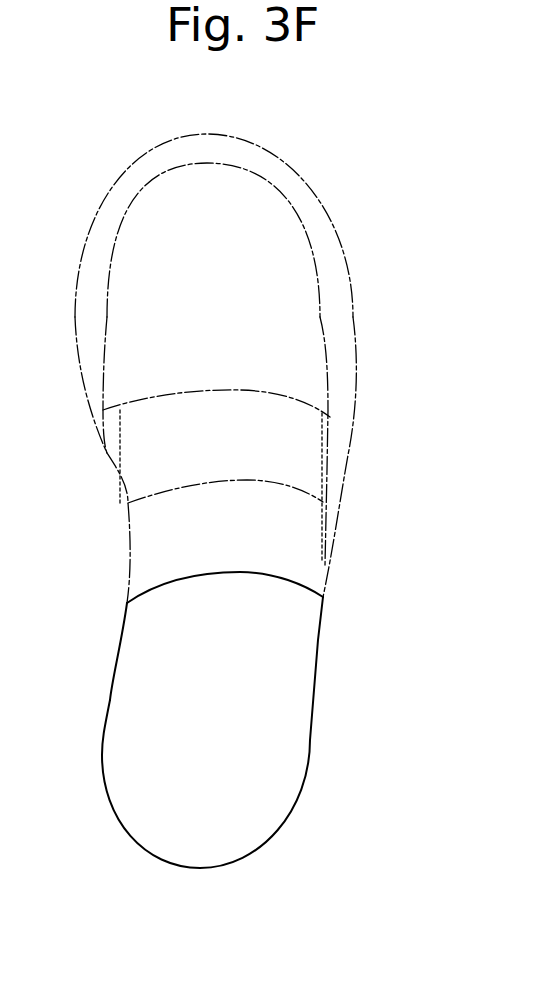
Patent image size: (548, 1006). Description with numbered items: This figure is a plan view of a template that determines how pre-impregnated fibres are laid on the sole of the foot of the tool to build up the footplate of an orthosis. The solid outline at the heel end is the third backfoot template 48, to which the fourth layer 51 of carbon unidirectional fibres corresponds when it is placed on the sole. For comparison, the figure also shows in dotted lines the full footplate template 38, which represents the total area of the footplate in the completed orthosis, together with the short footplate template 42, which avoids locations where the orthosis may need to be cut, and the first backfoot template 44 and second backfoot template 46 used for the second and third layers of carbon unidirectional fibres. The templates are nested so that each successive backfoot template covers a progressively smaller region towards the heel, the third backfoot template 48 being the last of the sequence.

The full footplate template 38 is at (265, 152).
The short footplate template 42 is at (305, 258).
The first backfoot template 44 is at (255, 390).
The second backfoot template 46 is at (250, 482).
The third backfoot template 48 is at (320, 642).
The fourth layer of carbon unidirectional fibres 51 is at (110, 698).